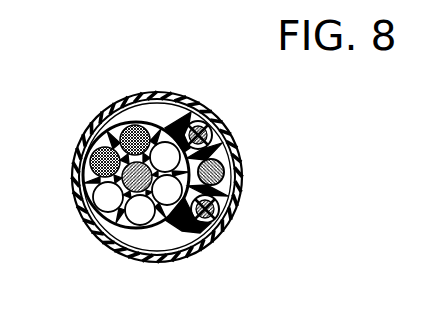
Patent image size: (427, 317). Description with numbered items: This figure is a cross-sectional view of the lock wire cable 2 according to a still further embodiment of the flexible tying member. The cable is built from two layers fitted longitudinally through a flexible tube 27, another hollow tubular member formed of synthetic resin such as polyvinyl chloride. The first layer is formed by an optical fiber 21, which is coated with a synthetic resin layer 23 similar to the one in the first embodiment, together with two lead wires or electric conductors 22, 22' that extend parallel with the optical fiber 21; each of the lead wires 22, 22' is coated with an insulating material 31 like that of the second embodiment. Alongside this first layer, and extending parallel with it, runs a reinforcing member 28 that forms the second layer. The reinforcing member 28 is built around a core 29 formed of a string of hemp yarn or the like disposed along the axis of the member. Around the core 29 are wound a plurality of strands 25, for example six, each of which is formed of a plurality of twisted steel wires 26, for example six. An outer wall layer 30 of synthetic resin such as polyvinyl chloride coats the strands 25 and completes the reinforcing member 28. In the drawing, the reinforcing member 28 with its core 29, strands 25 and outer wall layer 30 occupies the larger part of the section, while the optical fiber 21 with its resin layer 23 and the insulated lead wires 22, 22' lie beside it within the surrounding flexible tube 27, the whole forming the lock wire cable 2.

The lock wire cable 2 is at (160, 77).
The optical fiber 21 is at (221, 174).
The lead wire 22 is at (229, 123).
The lead wire 22' is at (243, 211).
The synthetic resin layer 23 is at (223, 142).
The strands 25 is at (110, 215).
The twisted steel wires 26 is at (95, 153).
The outer jacket 27 is at (197, 252).
The reinforcing member 28 is at (135, 125).
The core 29 is at (100, 206).
The outer wall layer 30 is at (113, 222).
The insulating material 31 is at (195, 120).